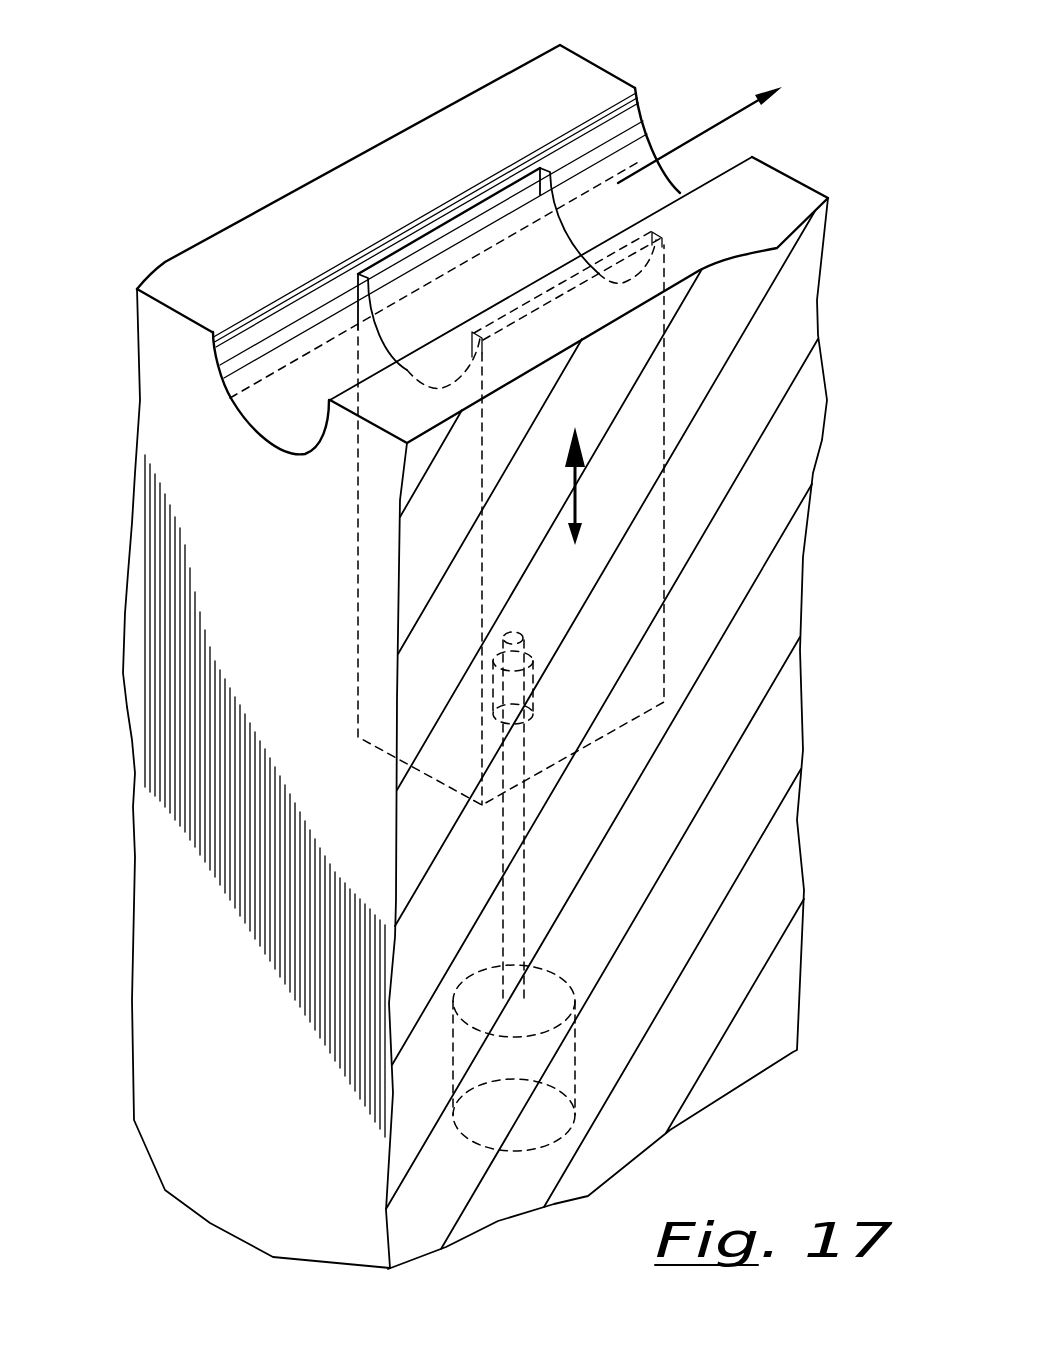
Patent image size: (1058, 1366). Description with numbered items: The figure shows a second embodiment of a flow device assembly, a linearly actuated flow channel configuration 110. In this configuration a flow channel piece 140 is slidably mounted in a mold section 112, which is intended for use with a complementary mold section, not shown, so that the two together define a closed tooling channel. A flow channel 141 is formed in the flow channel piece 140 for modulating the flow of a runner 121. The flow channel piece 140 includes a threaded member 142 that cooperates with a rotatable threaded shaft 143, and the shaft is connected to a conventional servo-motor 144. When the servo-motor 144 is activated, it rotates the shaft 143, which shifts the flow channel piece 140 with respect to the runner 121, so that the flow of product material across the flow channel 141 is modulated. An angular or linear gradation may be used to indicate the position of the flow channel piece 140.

The linearly actuated flow channel configuration 110 is at (297, 123).
The mold section 112 is at (173, 277).
The runner 121 is at (297, 313).
The flow channel piece 140 is at (398, 288).
The flow channel 141 is at (473, 237).
The threaded member 142 is at (511, 518).
The rotatable threaded shaft 143 is at (550, 816).
The servo-motor 144 is at (536, 1025).